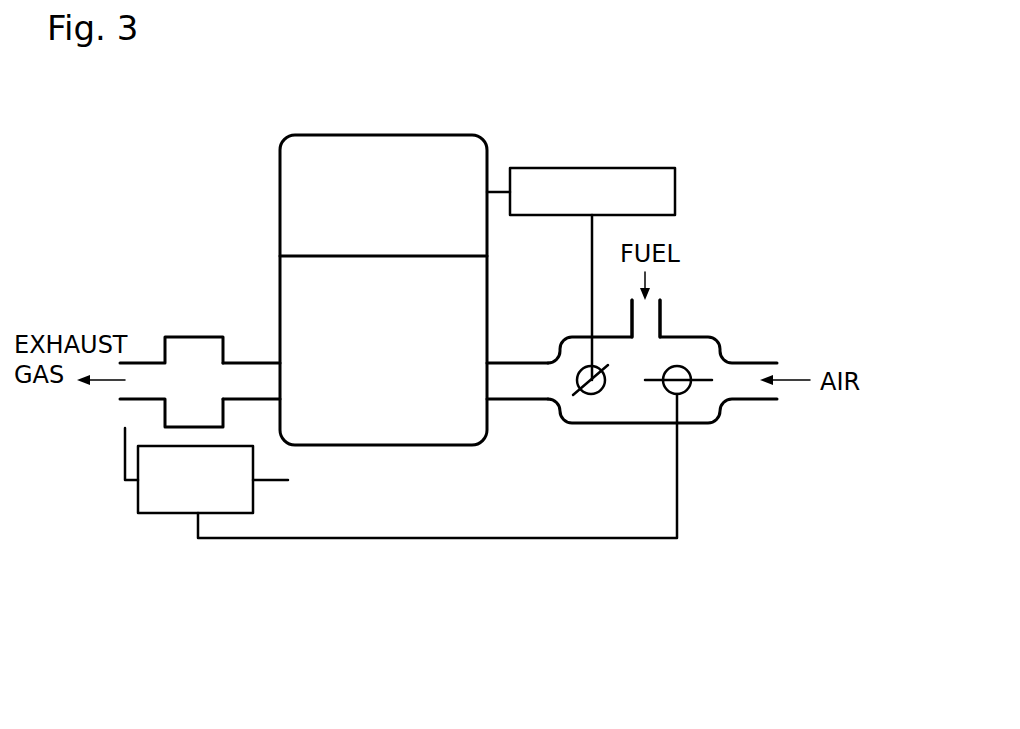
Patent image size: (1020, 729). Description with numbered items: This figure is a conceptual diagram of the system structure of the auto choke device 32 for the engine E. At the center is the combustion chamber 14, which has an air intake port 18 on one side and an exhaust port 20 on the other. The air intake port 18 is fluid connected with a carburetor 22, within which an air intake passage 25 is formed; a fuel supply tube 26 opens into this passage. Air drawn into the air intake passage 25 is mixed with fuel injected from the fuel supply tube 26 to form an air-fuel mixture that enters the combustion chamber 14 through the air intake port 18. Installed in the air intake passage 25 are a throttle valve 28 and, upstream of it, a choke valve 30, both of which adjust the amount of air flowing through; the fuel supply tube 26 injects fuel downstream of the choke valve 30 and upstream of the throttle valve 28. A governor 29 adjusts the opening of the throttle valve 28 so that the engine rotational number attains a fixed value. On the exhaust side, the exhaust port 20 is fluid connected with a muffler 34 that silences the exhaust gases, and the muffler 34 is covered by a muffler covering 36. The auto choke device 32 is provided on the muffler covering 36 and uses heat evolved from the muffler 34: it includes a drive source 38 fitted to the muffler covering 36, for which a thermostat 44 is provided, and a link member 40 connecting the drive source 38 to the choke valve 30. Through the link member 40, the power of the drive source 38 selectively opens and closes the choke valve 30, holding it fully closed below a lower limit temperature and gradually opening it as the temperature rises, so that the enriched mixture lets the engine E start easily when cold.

The engine E is at (383, 252).
The combustion chamber 14 is at (354, 383).
The air intake port 18 is at (480, 380).
The exhaust port 20 is at (280, 378).
The carburetor 22 is at (697, 425).
The air intake passage 25 is at (660, 350).
The fuel supply tube 26 is at (662, 302).
The throttle valve 28 is at (589, 395).
The governor 29 is at (670, 168).
The choke valve 30 is at (690, 388).
The auto choke device 32 is at (392, 527).
The muffler 34 is at (190, 337).
The muffler covering 36 is at (122, 451).
The drive source 38 is at (198, 519).
The thermostat 44 is at (168, 513).
The link member 40 is at (378, 540).